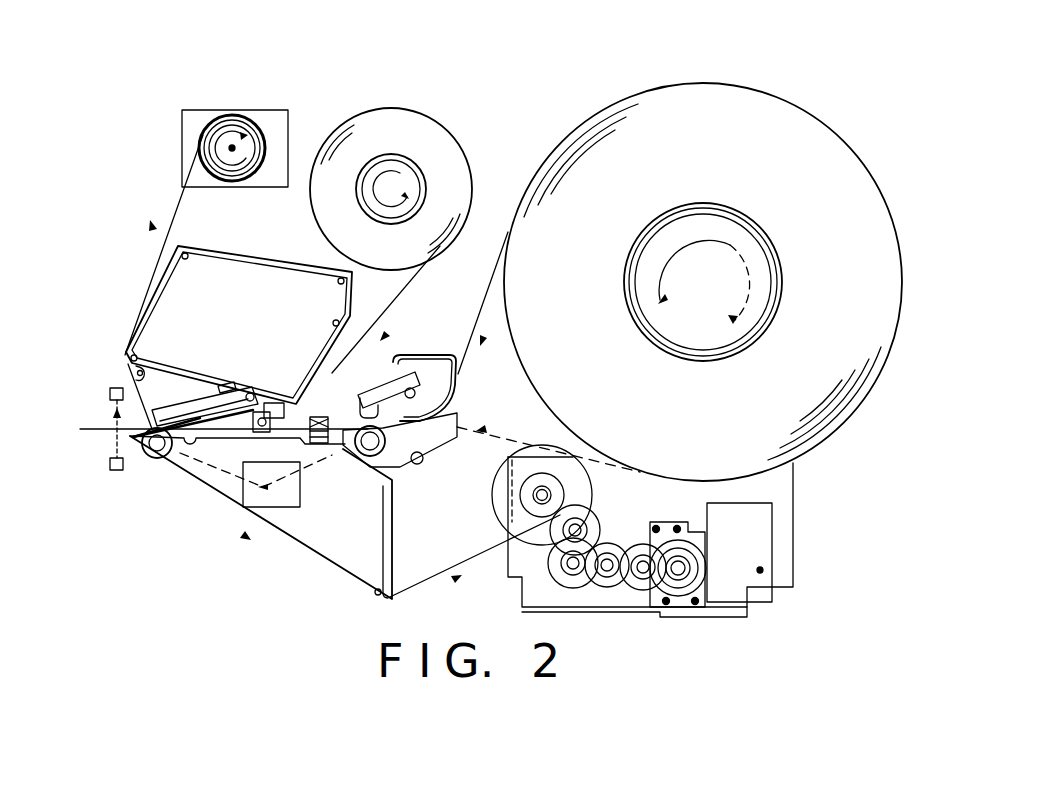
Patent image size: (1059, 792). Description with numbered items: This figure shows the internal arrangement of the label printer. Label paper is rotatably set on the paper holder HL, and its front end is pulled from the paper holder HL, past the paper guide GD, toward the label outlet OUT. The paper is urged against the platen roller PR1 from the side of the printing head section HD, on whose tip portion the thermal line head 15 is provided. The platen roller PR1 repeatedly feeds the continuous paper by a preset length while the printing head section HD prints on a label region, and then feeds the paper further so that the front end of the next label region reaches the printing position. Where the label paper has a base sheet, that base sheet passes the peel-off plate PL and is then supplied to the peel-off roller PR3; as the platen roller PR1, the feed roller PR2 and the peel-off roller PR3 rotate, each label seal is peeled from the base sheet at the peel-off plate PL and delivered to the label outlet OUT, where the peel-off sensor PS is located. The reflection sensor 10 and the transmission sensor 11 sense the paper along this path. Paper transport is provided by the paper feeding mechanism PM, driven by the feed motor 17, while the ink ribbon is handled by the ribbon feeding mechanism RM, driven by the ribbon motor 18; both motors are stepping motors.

The ribbon motor 18 is at (256, 111).
The ribbon feeding mechanism RM is at (338, 95).
The paper holder HL is at (746, 232).
The label outlet OUT is at (113, 366).
The peel-off sensor PS is at (104, 465).
The thermal line head 15 is at (160, 425).
The printing head section HD is at (248, 383).
The peel-off plate PL is at (143, 437).
The platen roller PR1 is at (160, 460).
The paper feeding mechanism PM is at (204, 535).
The transmission sensor 11 is at (325, 415).
The reflection sensor 10 is at (312, 448).
The feed motor 17 is at (290, 500).
The feed roller PR2 is at (370, 456).
The peel-off roller PR3 is at (527, 518).
The paper guide GD is at (450, 358).